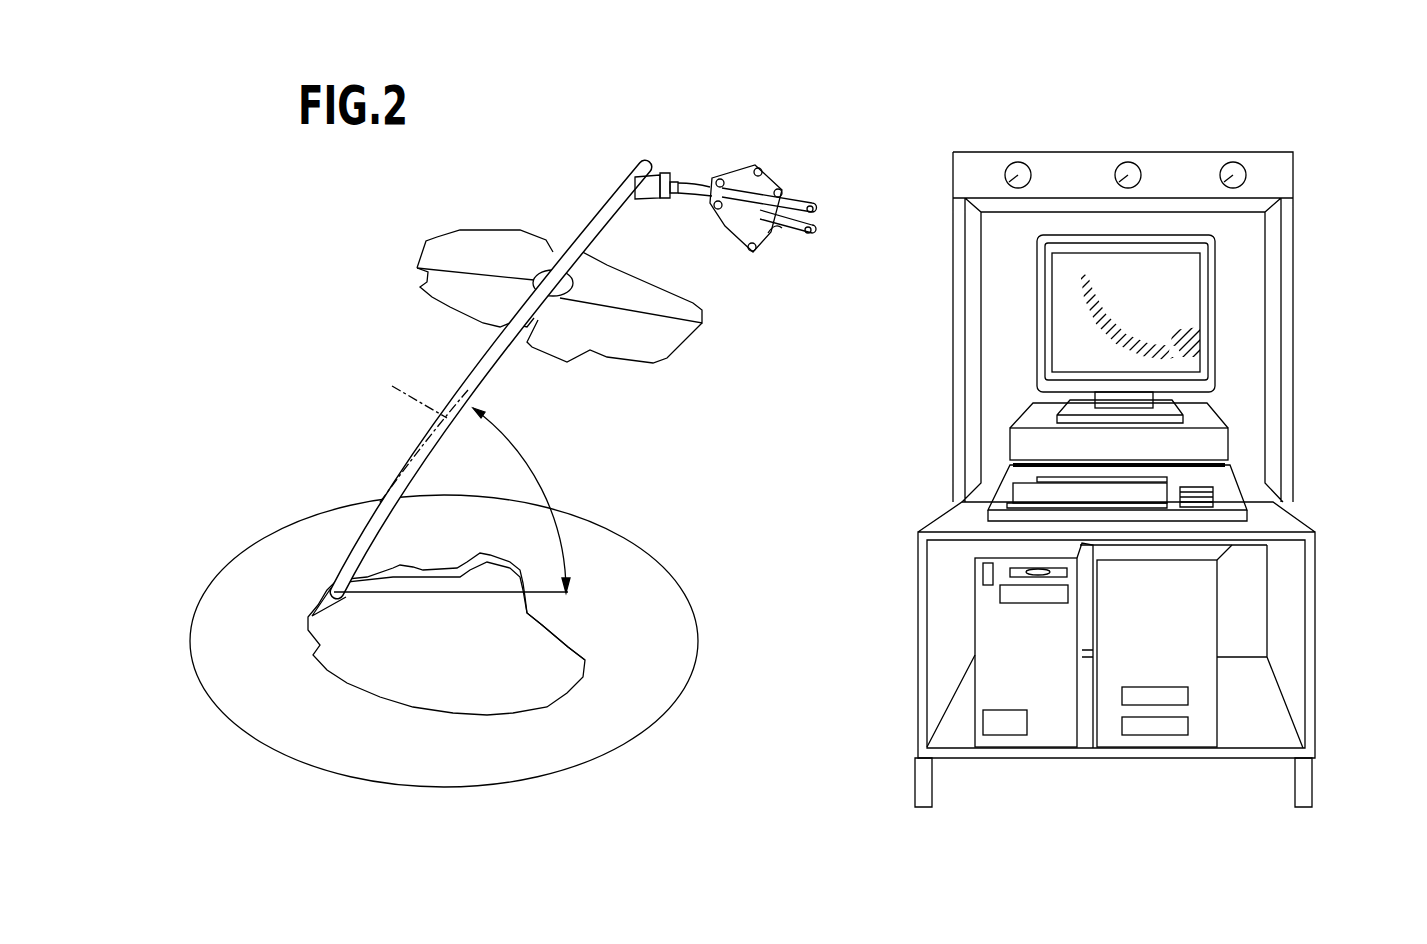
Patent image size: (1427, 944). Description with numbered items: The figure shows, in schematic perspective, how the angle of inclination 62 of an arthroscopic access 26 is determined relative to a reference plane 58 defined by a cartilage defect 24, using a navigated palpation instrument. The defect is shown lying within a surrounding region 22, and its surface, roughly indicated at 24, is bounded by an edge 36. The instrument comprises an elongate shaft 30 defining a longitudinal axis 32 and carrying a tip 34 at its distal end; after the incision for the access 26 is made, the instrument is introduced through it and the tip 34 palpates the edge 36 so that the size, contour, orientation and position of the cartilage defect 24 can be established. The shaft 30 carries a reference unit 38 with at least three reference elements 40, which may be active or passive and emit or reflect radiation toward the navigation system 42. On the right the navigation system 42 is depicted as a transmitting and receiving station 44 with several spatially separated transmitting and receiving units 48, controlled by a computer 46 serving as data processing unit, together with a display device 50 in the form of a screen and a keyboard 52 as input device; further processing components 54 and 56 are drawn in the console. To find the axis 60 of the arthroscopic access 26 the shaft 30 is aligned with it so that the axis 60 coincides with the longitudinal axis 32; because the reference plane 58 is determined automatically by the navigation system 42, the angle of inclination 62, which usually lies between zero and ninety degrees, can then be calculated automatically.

The dish 22 is at (647, 600).
The cartilage defect 24 is at (387, 680).
The arthroscopic access 26 is at (547, 279).
The elongate shaft 30 is at (494, 358).
The longitudinal axis 32 is at (403, 394).
The tip 34 is at (325, 590).
The edge 36 is at (583, 662).
The reference unit 38 is at (790, 157).
The reference elements 40 is at (847, 253).
The navigation system 42 is at (1333, 160).
The transmitting and receiving station 44 is at (1180, 150).
The computer 46 is at (1243, 413).
The transmitting and receiving units 48 is at (1019, 162).
The display device 50 is at (1167, 290).
The keyboard 52 is at (1030, 492).
The processing units 54 is at (1167, 628).
The processor 56 is at (840, 420).
The reference plane 58 is at (545, 588).
The axis 60 is at (426, 448).
The angle of inclination 62 is at (539, 480).